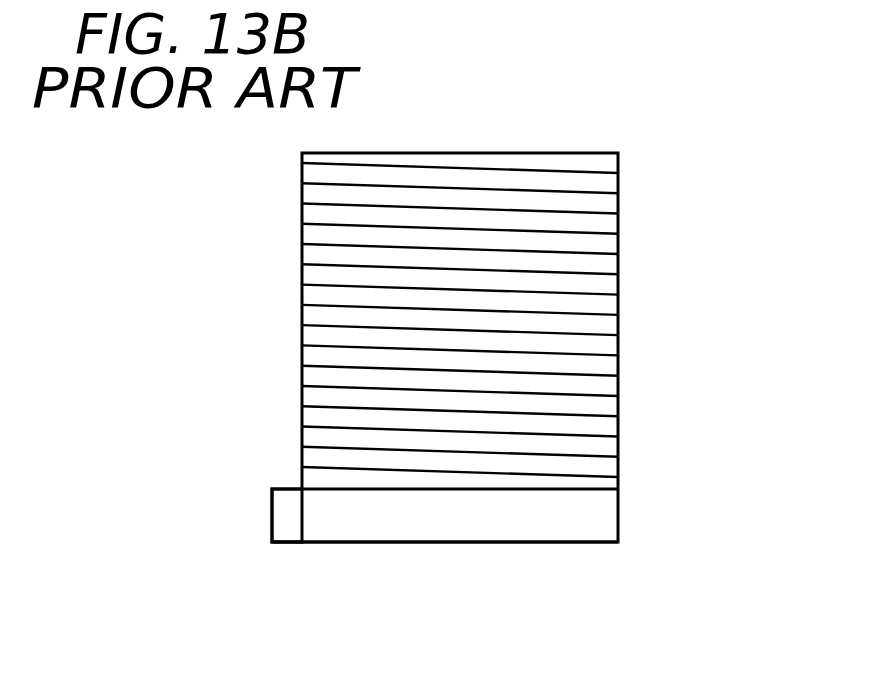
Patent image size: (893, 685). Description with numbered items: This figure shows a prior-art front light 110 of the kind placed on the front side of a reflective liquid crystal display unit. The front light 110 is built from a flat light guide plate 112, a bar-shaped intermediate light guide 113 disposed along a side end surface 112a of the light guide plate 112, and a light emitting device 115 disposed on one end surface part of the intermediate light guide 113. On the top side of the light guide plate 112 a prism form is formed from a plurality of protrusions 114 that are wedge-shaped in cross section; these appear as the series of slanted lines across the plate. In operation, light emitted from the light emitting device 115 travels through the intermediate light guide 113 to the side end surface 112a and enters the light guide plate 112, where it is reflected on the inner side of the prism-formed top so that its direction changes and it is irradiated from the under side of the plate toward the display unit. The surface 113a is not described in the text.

The front light 110 is at (447, 391).
The light guide plate 112 is at (461, 321).
The side end surface 112a is at (535, 490).
The intermediate light guide 113 is at (442, 556).
The bottom surface of base 113a is at (403, 543).
The protrusions 114 is at (318, 225).
The light emitting device 115 is at (280, 508).